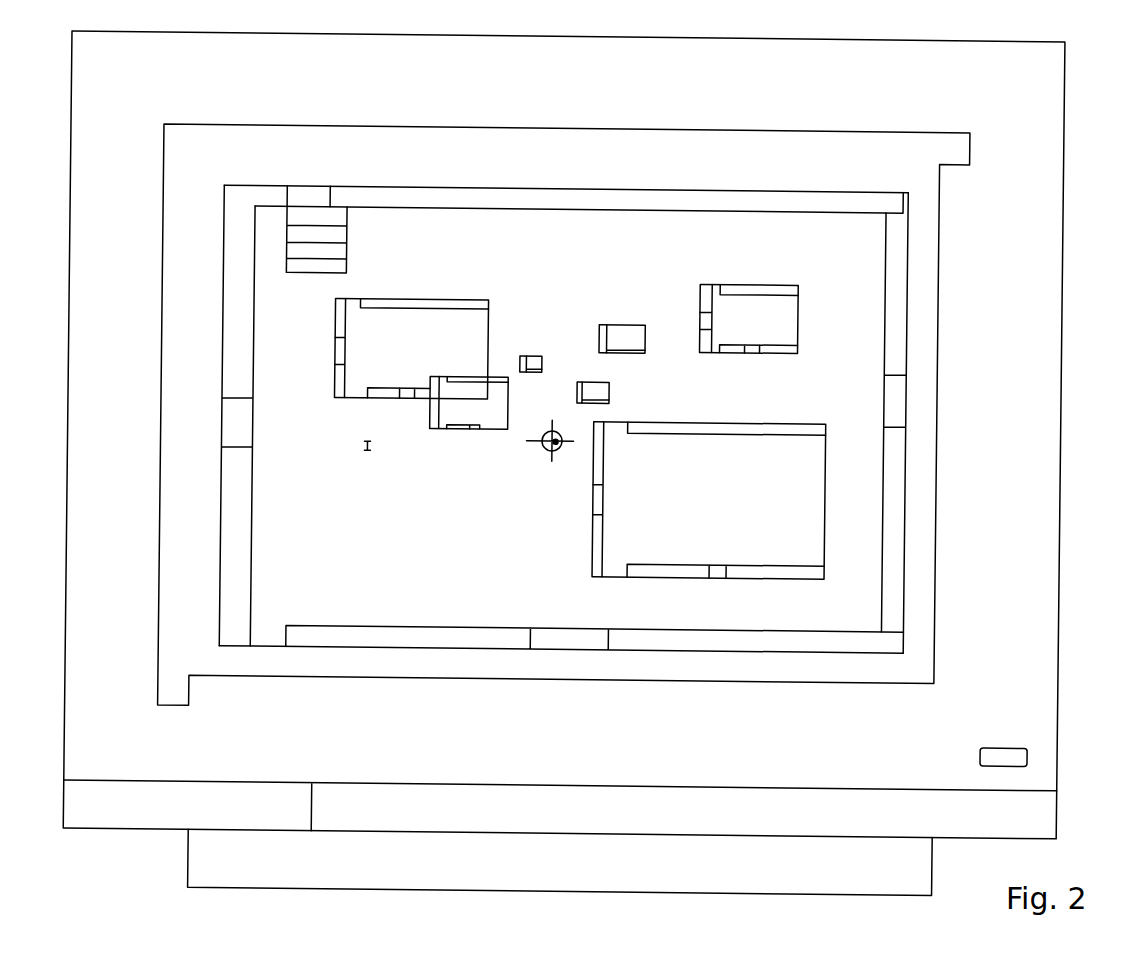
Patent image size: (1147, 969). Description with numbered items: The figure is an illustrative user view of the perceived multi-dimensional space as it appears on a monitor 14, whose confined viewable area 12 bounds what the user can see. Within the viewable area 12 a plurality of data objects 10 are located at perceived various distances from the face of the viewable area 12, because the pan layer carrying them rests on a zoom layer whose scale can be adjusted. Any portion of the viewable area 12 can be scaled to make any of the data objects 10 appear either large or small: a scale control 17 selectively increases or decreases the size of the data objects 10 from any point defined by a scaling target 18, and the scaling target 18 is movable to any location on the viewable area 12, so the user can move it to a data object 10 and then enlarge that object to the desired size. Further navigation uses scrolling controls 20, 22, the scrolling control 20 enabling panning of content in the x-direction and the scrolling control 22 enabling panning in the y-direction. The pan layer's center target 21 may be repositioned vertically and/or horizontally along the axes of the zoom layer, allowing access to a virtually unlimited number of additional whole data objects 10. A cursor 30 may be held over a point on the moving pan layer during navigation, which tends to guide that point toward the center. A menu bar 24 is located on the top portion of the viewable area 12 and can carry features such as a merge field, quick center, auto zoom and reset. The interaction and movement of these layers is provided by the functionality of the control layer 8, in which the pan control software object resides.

The control layer 8 is at (546, 404).
The data object 10 is at (492, 320).
The viewable area 12 is at (191, 362).
The monitor 14 is at (1076, 371).
The scale control 17 is at (227, 430).
The scaling target 18 is at (549, 442).
The scrolling control 20 is at (594, 643).
The center target 21 is at (559, 441).
The scrolling control 22 is at (907, 393).
The menu bar 24 is at (683, 186).
The cursor 30 is at (370, 442).